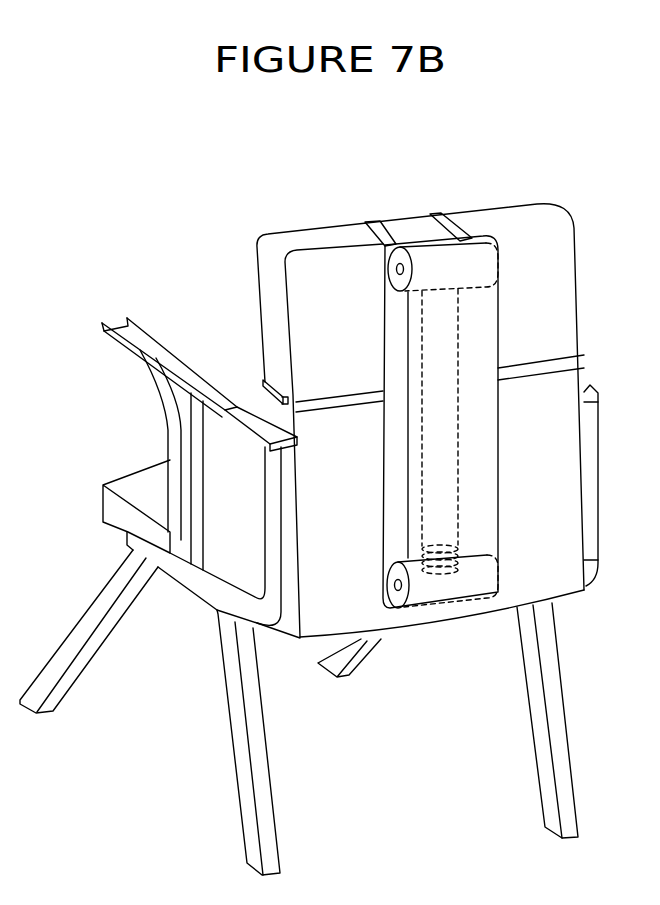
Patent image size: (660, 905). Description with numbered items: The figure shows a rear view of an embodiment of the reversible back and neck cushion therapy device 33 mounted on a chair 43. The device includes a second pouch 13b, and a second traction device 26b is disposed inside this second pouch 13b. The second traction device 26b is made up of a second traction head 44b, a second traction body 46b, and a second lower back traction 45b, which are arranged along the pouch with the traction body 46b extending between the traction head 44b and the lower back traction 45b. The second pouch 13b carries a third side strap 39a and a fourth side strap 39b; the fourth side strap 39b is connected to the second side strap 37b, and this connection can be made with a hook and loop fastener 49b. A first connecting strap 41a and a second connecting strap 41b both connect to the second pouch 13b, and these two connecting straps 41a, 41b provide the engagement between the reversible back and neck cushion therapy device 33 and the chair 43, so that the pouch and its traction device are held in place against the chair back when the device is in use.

The reversible back and neck cushion therapy device 33 is at (372, 178).
The second traction device 26b is at (476, 347).
The first connecting strap 41a is at (440, 222).
The second connecting strap 41b is at (385, 228).
The second pouch 13b is at (488, 462).
The second traction head 44b is at (487, 268).
The second lower back traction 45b is at (488, 580).
The second traction body 46b is at (453, 409).
The third side strap 39a is at (563, 363).
The fourth side strap 39b is at (358, 400).
The second side strap 37b is at (270, 391).
The hook and loop fastener 49b is at (231, 407).
The chair 43 is at (150, 485).